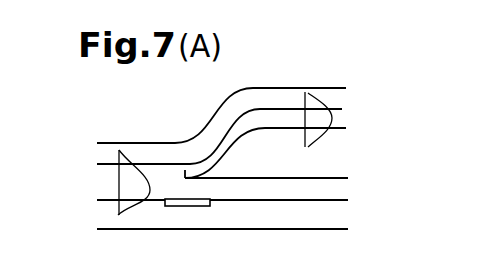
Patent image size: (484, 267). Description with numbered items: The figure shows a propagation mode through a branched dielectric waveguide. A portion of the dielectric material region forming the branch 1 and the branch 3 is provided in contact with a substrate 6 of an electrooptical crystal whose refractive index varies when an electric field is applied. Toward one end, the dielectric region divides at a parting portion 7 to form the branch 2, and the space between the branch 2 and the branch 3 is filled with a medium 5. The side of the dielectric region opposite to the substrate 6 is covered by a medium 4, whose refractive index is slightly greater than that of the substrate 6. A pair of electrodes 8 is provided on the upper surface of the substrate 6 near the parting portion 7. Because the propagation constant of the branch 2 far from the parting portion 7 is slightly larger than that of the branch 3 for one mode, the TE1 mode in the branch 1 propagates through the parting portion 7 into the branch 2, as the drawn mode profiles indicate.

The branch 1 is at (105, 188).
The branch 2 is at (338, 120).
The branch 3 is at (262, 188).
The medium 4 is at (278, 93).
The medium 5 is at (328, 157).
The substrate 6 is at (325, 218).
The parting portion 7 is at (183, 178).
The electrodes 8 is at (178, 206).